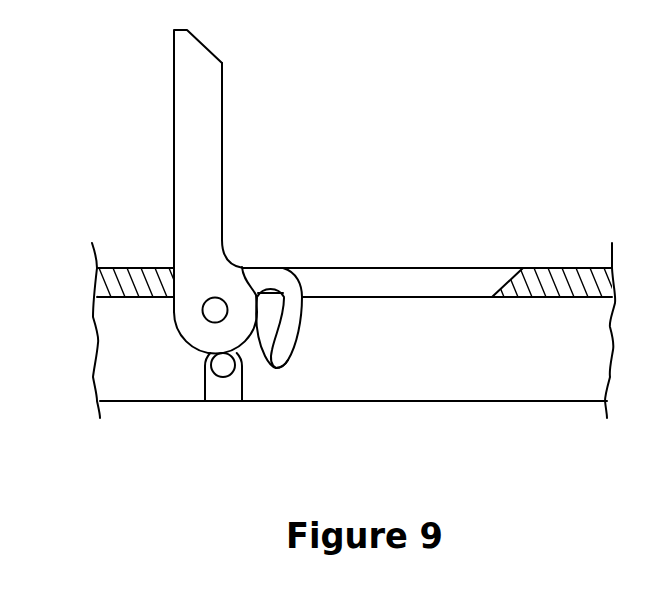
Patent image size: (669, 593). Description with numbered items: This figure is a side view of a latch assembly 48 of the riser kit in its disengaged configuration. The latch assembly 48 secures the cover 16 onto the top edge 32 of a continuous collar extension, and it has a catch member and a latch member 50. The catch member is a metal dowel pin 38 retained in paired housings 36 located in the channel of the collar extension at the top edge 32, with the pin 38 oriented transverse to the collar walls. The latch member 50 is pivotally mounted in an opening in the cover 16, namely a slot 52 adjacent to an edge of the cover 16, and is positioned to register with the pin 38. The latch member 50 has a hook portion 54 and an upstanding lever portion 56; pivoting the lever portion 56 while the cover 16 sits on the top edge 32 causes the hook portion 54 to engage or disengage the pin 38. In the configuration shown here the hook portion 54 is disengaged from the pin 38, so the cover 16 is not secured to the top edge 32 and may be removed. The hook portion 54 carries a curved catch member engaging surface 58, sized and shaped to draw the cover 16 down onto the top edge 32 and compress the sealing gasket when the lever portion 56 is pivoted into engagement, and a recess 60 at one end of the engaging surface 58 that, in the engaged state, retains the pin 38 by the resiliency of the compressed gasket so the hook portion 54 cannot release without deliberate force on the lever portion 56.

The cover 16 is at (577, 268).
The top edge 32 is at (533, 378).
The paired housings 36 is at (242, 392).
The metal dowel pin 38 is at (208, 368).
The latch assembly 48 is at (337, 138).
The latch member 50 is at (173, 135).
The slot 52 is at (390, 252).
The hook portion 54 is at (293, 358).
The lever portion 56 is at (213, 136).
The catch member engaging surface 58 is at (264, 372).
The recess 60 is at (243, 264).